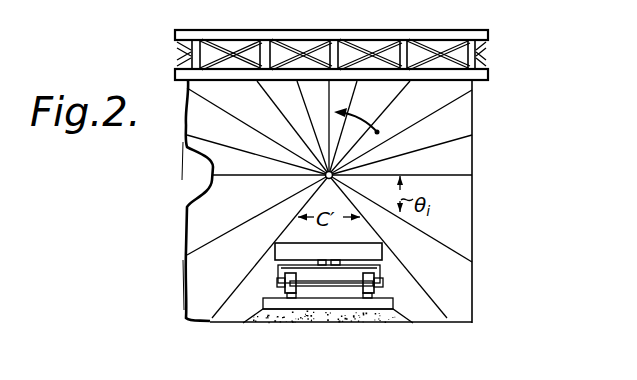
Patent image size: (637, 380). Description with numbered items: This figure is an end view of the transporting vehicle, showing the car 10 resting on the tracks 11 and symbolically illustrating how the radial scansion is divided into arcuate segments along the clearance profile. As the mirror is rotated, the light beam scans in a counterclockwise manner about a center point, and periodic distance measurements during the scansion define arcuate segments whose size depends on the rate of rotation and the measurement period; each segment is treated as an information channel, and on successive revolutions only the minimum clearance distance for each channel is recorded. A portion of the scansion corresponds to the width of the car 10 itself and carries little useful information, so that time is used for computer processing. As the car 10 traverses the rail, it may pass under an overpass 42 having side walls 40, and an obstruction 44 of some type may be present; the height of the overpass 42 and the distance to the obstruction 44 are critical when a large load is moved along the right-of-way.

The car 10 is at (310, 252).
The tracks 11 is at (280, 293).
The side walls 40 is at (473, 207).
The overpass 42 is at (333, 32).
The obstruction 44 is at (196, 188).